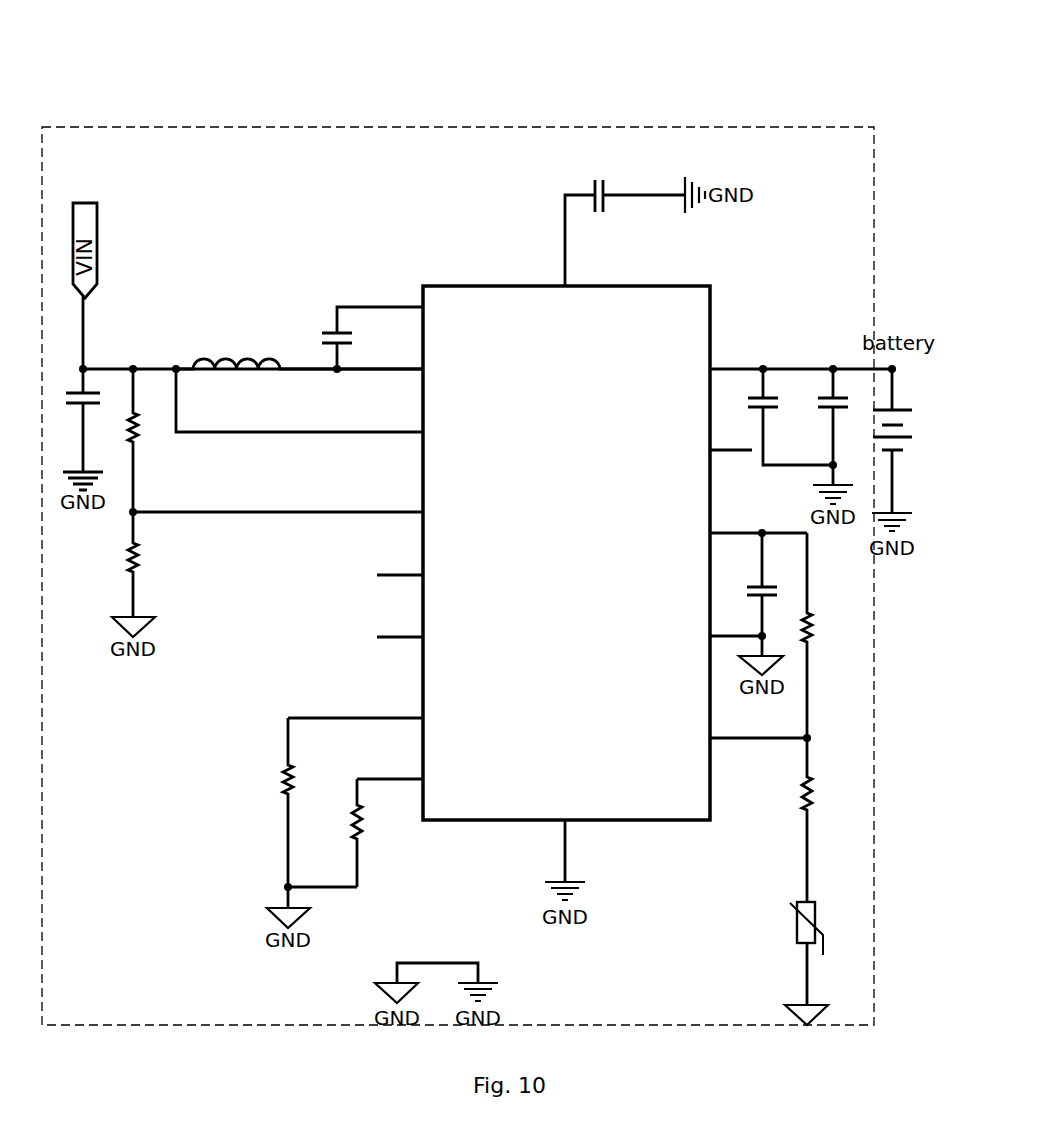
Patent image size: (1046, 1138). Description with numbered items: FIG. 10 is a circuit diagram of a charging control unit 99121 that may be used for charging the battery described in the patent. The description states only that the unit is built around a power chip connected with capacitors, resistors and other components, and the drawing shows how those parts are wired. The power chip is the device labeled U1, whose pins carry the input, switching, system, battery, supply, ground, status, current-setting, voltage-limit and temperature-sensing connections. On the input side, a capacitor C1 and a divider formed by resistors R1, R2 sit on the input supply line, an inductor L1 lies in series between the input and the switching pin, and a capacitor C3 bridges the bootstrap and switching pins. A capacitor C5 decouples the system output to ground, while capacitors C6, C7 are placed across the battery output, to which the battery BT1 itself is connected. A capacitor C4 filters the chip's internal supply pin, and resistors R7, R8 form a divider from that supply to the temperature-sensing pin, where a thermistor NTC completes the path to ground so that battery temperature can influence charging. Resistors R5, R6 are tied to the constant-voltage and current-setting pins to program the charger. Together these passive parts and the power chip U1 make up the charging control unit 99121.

The charging control unit 99121 is at (472, 127).
The charger IC U1 is at (575, 535).
The input capacitor C1 is at (90, 408).
The resistor R1 is at (147, 440).
The resistor R2 is at (112, 564).
The inductor L1 is at (299, 352).
The bootstrap capacitor C3 is at (372, 326).
The system capacitor C5 is at (625, 221).
The battery capacitor C6 is at (790, 417).
The battery capacitor C7 is at (848, 427).
The battery BT1 is at (921, 441).
The VCC capacitor C4 is at (778, 584).
The resistor R7 is at (821, 635).
The resistor R8 is at (820, 820).
The resistor R5 is at (302, 802).
The resistor R6 is at (371, 833).
The NTC thermistor NTC is at (825, 952).